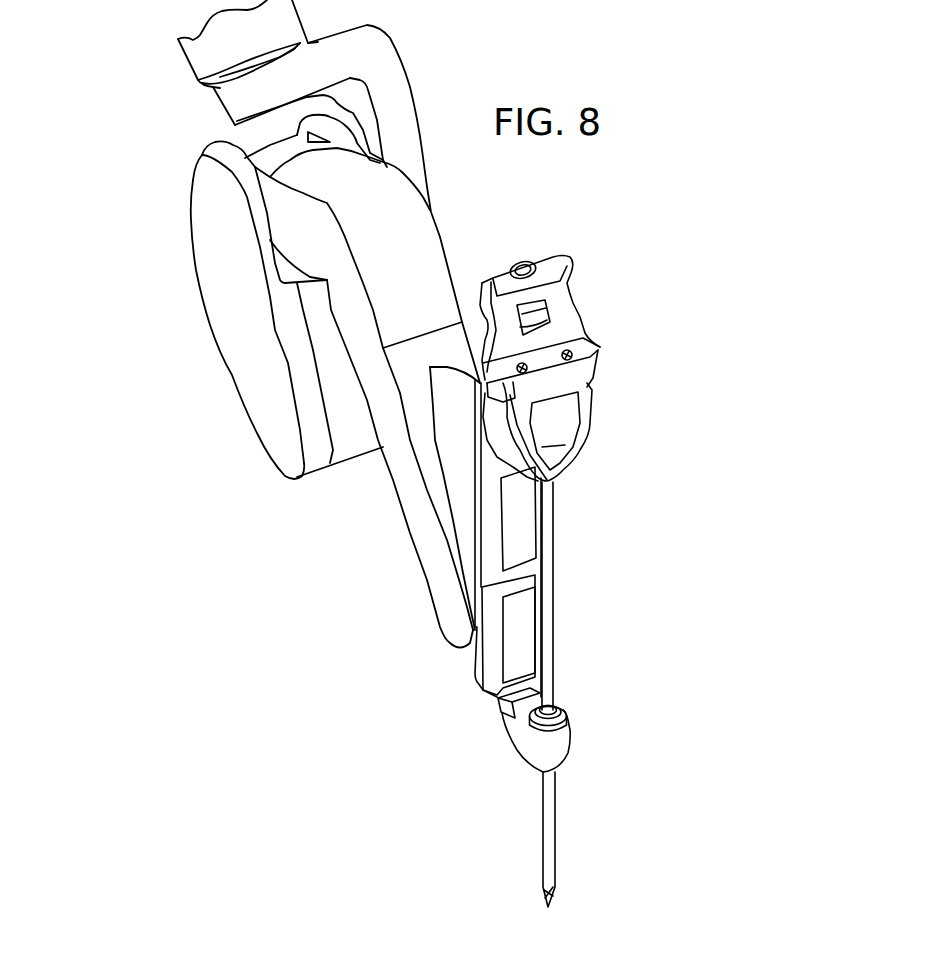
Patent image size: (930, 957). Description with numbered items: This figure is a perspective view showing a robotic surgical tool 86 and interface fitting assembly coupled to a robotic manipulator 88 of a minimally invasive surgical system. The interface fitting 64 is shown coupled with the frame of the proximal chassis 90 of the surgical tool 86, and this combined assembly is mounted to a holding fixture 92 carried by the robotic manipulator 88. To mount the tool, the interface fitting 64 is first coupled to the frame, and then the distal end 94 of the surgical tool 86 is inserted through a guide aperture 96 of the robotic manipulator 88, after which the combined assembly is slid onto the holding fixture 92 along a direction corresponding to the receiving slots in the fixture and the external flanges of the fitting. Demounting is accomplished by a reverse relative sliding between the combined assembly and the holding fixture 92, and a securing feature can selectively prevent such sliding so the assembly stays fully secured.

The interface fitting 64 is at (601, 330).
The surgical tool 86 is at (635, 586).
The robotic manipulator 88 is at (204, 360).
The proximal chassis 90 is at (590, 443).
The holding fixture 92 is at (610, 432).
The distal end 94 is at (583, 893).
The guide aperture 96 is at (568, 692).